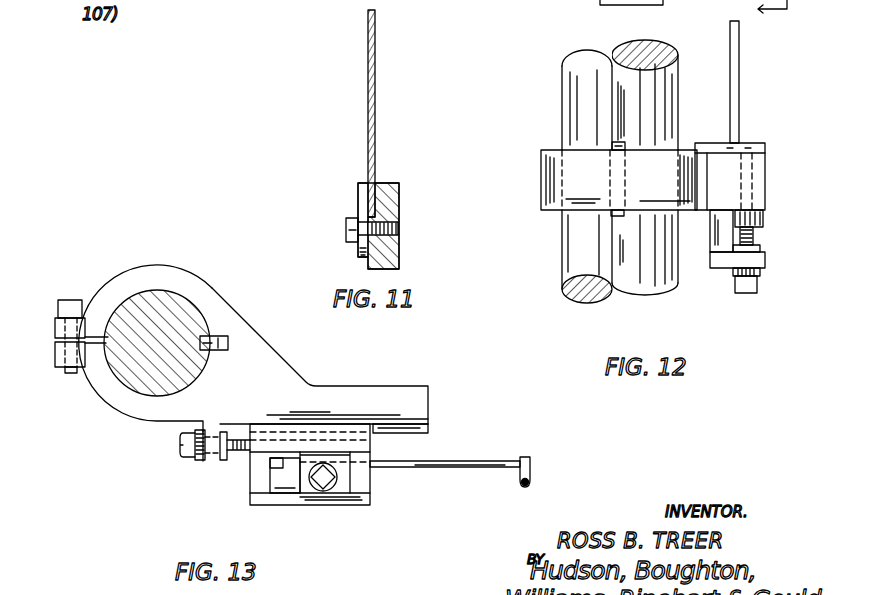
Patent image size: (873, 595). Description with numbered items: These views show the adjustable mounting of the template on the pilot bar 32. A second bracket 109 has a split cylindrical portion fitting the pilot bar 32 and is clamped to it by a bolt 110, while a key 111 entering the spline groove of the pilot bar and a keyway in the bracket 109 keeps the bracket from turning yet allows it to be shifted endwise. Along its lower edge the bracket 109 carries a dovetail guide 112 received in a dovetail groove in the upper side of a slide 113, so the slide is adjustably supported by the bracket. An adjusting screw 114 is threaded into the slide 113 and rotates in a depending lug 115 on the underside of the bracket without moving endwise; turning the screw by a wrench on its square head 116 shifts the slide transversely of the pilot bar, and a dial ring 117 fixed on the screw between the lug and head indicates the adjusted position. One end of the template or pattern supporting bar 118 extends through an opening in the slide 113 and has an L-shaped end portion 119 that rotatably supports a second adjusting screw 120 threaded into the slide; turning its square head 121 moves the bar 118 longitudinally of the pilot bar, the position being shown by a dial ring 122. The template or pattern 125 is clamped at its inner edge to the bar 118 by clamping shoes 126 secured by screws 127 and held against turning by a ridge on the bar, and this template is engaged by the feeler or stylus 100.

In FIG. 12, the pilot bar 32 is at (660, 100).
In FIG. 13, the pilot bar 32 is at (128, 376).
In FIG. 13, the feeler or stylus 100 is at (530, 470).
In FIG. 12, the second bracket 109 is at (543, 210).
In FIG. 13, the second bracket 109 is at (275, 366).
In FIG. 13, the bolt 110 is at (85, 283).
In FIG. 12, the key 111 is at (612, 147).
In FIG. 13, the key 111 is at (214, 336).
In FIG. 12, the dovetail guide 112 is at (698, 186).
In FIG. 13, the dovetail guide 112 is at (410, 432).
In FIG. 12, the slide 113 is at (734, 178).
In FIG. 13, the slide 113 is at (260, 478).
In FIG. 13, the adjusting screw 114 is at (227, 452).
In FIG. 13, the depending lug 115 is at (200, 458).
In FIG. 13, the square head 116 is at (180, 447).
In FIG. 13, the dial ring 117 is at (195, 428).
In FIG. 11, the template or pattern supporting bar 118 is at (390, 183).
In FIG. 13, the template or pattern supporting bar 118 is at (285, 480).
In FIG. 12, the L-shaped end portion 119 is at (712, 255).
In FIG. 12, the adjusting screw 120 is at (762, 238).
In FIG. 12, the square head 121 is at (745, 293).
In FIG. 13, the square head 121 is at (330, 485).
In FIG. 12, the dial ring 122 is at (762, 273).
In FIG. 11, the template or pattern 125 is at (375, 83).
In FIG. 12, the template or pattern 125 is at (740, 90).
In FIG. 13, the template or pattern 125 is at (415, 467).
In FIG. 11, the clamping shoes 126 is at (358, 192).
In FIG. 11, the screws 127 is at (346, 222).